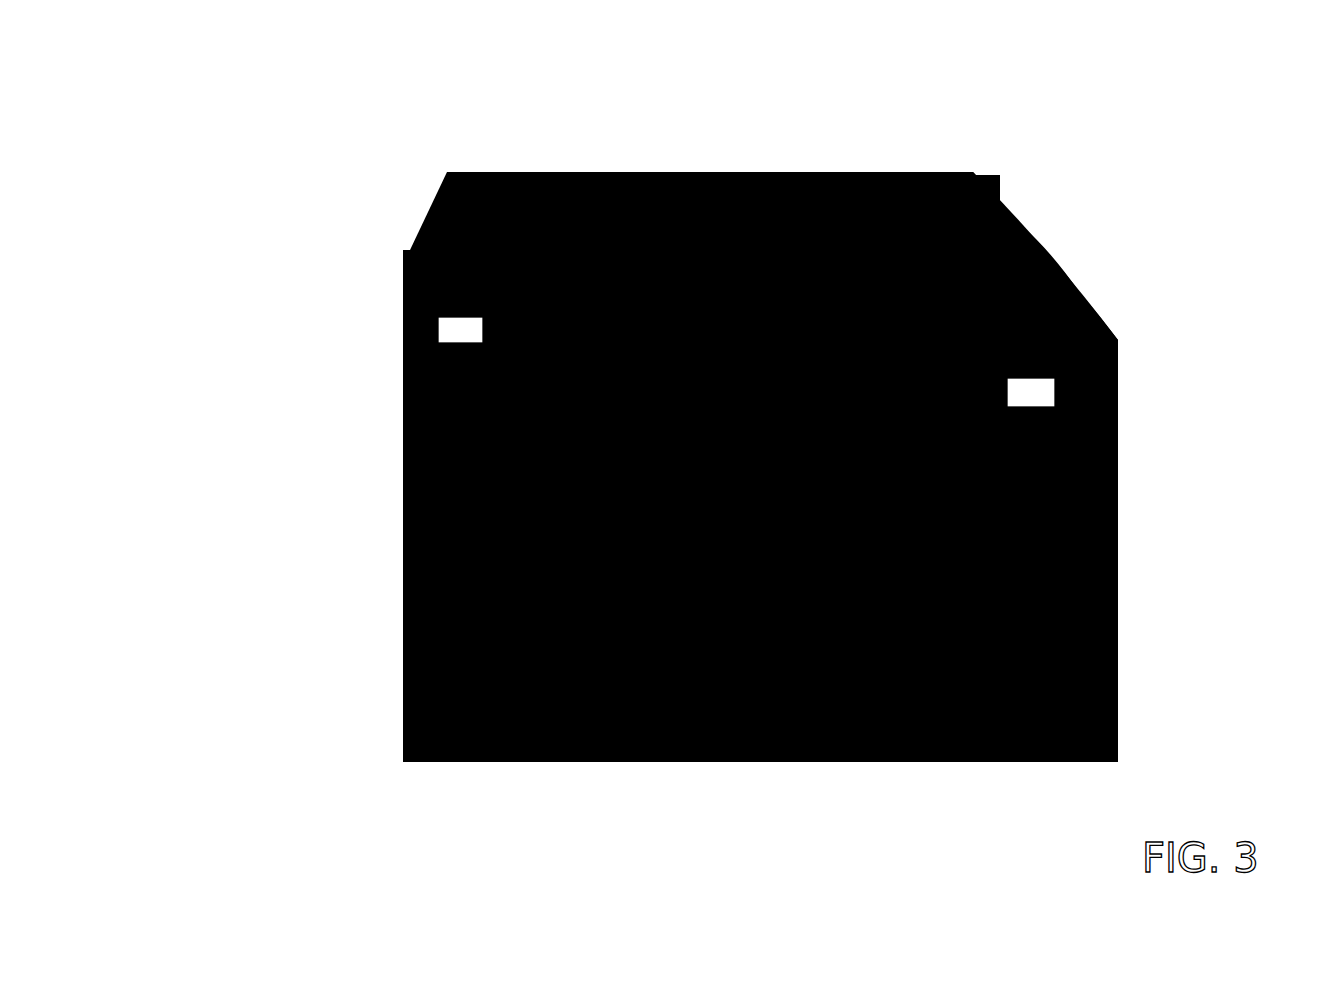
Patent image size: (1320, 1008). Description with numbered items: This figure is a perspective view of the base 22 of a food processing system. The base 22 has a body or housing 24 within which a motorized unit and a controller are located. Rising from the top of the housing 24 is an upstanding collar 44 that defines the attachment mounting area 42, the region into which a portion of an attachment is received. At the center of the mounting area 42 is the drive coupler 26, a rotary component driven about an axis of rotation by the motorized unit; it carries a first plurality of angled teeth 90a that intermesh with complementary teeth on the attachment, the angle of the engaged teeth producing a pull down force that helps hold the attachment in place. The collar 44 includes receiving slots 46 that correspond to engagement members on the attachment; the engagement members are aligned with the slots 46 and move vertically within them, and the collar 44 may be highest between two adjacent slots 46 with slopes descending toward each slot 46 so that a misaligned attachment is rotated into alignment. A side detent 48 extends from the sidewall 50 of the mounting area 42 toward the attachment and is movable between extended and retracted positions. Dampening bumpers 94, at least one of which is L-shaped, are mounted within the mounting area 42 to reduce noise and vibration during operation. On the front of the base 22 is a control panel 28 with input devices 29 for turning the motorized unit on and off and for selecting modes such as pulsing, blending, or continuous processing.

The base 22 is at (280, 465).
The housing 24 is at (560, 690).
The drive coupler 26 is at (760, 395).
The control panel 28 is at (1085, 610).
The input devices 29 is at (1090, 545).
The attachment mounting area 42 is at (975, 262).
The upstanding collar 44 is at (520, 455).
The receiving slots 46 is at (438, 322).
The side detent 48 is at (557, 200).
The sidewall 50 is at (640, 330).
The first plurality of angled teeth 90a is at (700, 525).
The dampening bumpers 94 is at (610, 360).